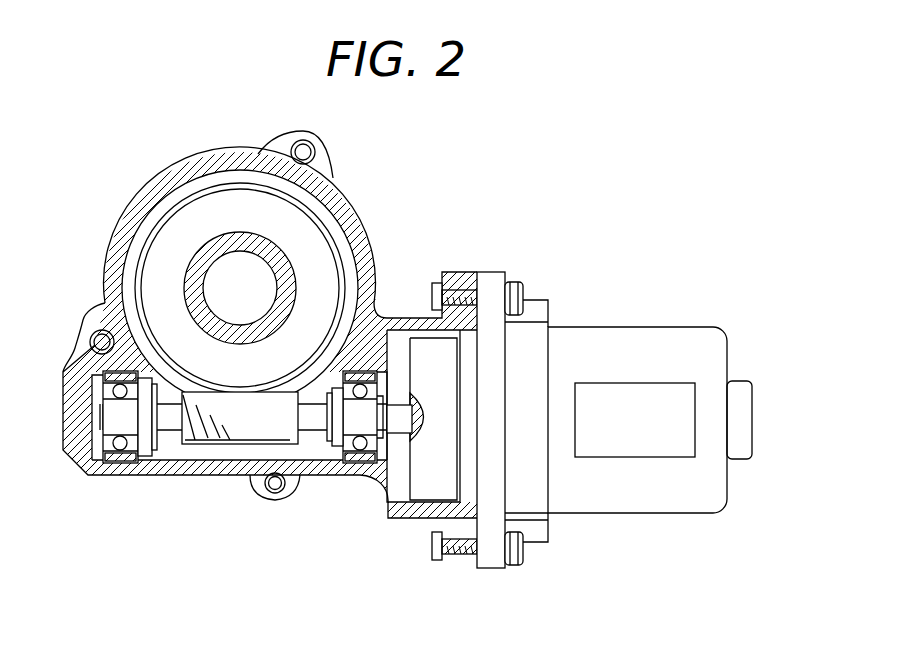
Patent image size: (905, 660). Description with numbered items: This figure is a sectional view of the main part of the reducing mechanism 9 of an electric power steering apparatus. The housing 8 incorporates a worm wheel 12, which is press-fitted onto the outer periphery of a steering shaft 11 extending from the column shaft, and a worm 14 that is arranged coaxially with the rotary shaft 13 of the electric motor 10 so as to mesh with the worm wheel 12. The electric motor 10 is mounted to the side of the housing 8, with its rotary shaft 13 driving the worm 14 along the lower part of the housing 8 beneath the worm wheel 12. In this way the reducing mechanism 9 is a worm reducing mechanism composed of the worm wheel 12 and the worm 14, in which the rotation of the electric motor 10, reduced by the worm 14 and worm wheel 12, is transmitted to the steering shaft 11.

The housing 8 is at (365, 285).
The reducing mechanism 9 is at (132, 558).
The electric motor 10 is at (661, 337).
The steering shaft 11 is at (202, 288).
The worm wheel 12 is at (247, 377).
The rotary shaft 13 is at (398, 420).
The worm 14 is at (192, 440).